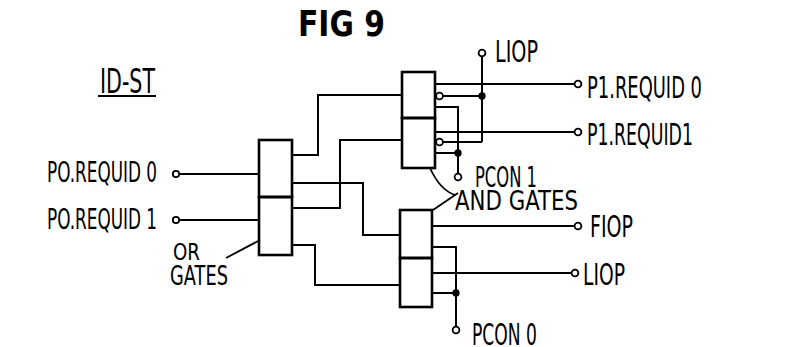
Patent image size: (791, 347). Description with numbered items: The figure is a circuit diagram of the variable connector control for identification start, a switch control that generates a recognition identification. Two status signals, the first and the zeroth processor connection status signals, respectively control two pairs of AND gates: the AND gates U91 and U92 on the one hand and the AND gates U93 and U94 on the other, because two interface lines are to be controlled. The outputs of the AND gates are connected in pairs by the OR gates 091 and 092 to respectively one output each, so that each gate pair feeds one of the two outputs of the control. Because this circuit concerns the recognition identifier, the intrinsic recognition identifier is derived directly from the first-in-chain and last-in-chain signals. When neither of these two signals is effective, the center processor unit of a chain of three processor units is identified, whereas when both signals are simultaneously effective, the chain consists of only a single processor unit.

The OR gate 091 is at (276, 149).
The OR gate 092 is at (268, 247).
The AND gate U91 is at (402, 80).
The AND gate U92 is at (402, 137).
The AND gate U93 is at (399, 222).
The AND gate U94 is at (400, 272).